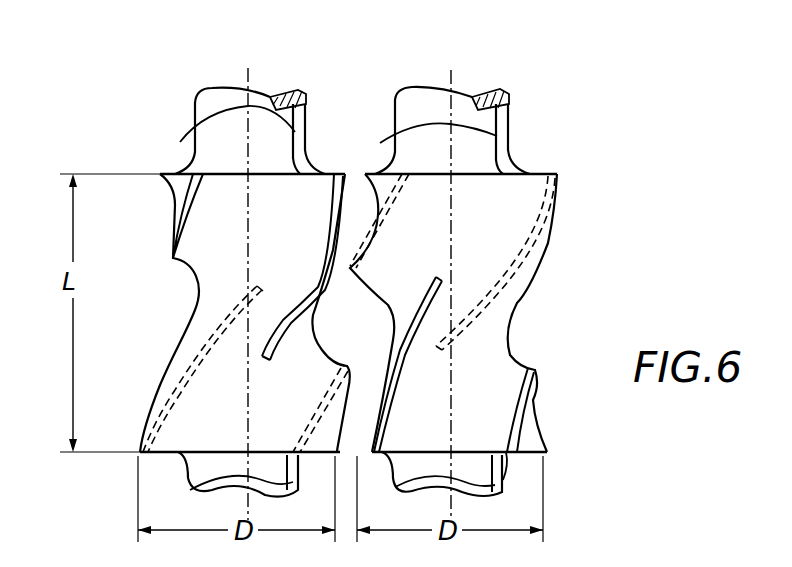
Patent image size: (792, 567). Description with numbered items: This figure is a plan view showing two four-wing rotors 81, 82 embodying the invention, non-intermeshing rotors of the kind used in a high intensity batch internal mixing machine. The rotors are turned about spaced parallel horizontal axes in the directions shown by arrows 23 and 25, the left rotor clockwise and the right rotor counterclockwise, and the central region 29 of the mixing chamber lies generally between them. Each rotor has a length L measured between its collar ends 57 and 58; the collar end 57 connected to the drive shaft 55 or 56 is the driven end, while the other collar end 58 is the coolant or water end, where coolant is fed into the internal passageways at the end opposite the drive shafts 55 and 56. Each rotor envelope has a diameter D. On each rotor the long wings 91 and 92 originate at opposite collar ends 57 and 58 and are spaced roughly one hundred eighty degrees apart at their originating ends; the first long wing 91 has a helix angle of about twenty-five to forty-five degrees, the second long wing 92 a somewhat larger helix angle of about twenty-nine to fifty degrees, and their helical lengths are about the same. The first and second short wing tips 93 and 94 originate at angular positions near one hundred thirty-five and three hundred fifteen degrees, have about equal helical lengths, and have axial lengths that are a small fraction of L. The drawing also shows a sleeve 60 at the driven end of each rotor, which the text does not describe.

The arrow 23 is at (386, 146).
The arrow 25 is at (508, 130).
The central region 29 is at (364, 338).
The drive shaft 55 is at (213, 107).
The drive shaft 56 is at (512, 124).
The collar end 57 is at (170, 180).
The collar end 58 is at (185, 476).
The seal sleeve 60 is at (252, 78).
The four-wing rotor 81 is at (183, 280).
The four-wing rotor 82 is at (522, 306).
The first long wing 91 is at (323, 240).
The second long wing 92 is at (172, 357).
The first short wing tip 93 is at (186, 222).
The second short wing tip 94 is at (322, 397).